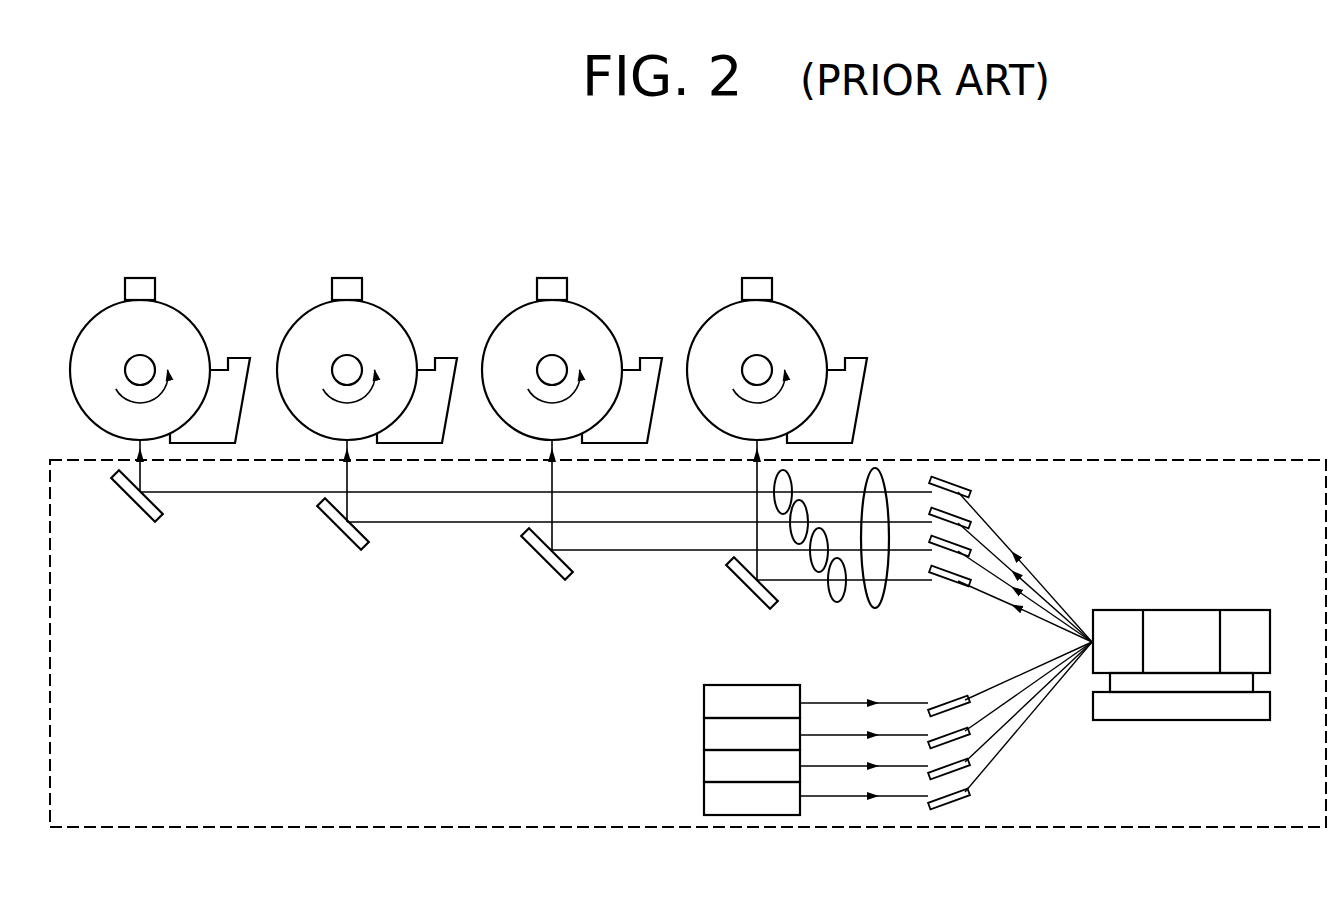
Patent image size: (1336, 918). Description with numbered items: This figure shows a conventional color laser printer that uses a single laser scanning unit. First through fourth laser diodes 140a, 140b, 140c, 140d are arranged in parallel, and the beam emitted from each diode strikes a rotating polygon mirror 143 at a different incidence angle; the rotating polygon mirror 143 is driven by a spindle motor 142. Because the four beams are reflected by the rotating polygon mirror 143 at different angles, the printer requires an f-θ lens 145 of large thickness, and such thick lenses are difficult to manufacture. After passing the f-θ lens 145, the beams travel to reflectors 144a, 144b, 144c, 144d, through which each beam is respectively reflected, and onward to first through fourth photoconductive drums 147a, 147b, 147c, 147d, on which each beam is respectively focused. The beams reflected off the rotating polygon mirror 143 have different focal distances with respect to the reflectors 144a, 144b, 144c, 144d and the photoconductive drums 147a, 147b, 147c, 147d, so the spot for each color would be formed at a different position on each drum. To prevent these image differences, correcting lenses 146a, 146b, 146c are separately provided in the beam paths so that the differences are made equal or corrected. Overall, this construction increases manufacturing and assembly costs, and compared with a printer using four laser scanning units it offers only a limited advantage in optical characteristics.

The first laser diode 140a is at (704, 702).
The second laser diode 140b is at (704, 733).
The third laser diode 140c is at (704, 765).
The fourth laser diode 140d is at (704, 796).
The spindle motor 142 is at (1185, 720).
The rotating polygon mirror 143 is at (1184, 610).
The reflector 144a is at (966, 568).
The reflector 144b is at (963, 540).
The reflector 144c is at (961, 512).
The reflector 144d is at (962, 480).
The f-θ lens 145 is at (882, 606).
The first correcting lens 146a is at (785, 472).
The second correcting lens 146b is at (815, 572).
The third correcting lens 146c is at (799, 500).
The first photoconductive drum 147a is at (794, 310).
The second photoconductive drum 147b is at (589, 310).
The third photoconductive drum 147c is at (384, 310).
The fourth photoconductive drum 147d is at (177, 310).